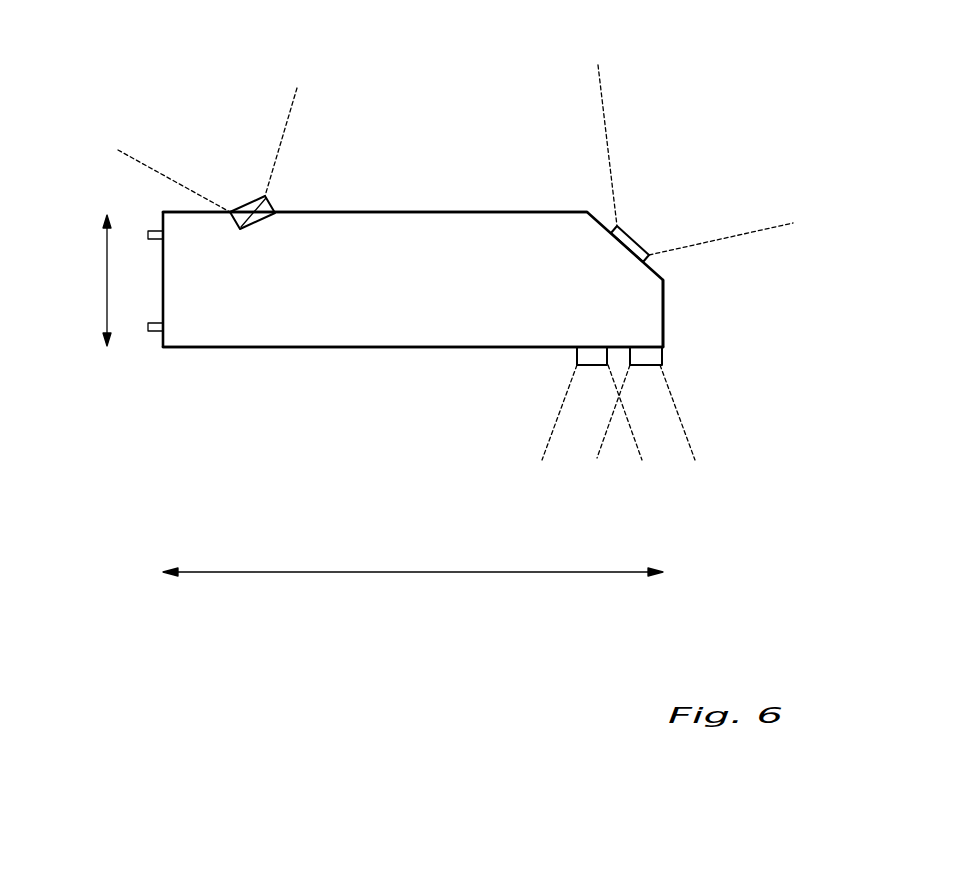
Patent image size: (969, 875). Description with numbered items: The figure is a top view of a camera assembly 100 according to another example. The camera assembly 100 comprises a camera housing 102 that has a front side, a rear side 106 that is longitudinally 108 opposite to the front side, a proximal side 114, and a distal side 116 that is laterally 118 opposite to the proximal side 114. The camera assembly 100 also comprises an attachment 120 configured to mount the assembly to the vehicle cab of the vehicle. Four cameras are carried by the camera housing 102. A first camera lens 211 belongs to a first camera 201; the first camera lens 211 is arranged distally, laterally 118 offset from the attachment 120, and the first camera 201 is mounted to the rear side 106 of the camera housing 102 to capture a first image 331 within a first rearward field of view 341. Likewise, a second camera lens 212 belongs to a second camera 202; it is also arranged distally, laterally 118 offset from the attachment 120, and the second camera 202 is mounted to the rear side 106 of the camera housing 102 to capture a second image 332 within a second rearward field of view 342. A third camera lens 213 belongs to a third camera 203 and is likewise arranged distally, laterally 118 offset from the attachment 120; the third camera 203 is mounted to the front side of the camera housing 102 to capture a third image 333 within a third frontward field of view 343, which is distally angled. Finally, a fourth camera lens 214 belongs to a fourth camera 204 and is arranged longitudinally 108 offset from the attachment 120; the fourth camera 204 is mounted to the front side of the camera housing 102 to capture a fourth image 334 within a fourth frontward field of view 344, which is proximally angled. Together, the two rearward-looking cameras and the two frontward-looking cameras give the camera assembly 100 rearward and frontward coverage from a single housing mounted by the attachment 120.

The camera assembly 100 is at (450, 93).
The camera housing 102 is at (338, 333).
The rear side 106 is at (258, 348).
The longitudinal direction 108 is at (105, 268).
The proximal side 114 is at (667, 285).
The distal side 116 is at (163, 213).
The lateral direction 118 is at (418, 573).
The attachment 120 is at (148, 327).
The first camera 201 is at (663, 353).
The second camera 202 is at (577, 352).
The third camera 203 is at (608, 246).
The fourth camera 204 is at (250, 213).
The first camera lens 211 is at (642, 367).
The second camera lens 212 is at (593, 367).
The third camera lens 213 is at (633, 240).
The fourth camera lens 214 is at (244, 208).
The first image 331 is at (680, 422).
The second image 332 is at (560, 408).
The third image 333 is at (607, 140).
The fourth image 334 is at (145, 164).
The first rearward field of view 341 is at (602, 448).
The second rearward field of view 342 is at (640, 455).
The third frontward field of view 343 is at (752, 231).
The fourth frontward field of view 344 is at (293, 112).